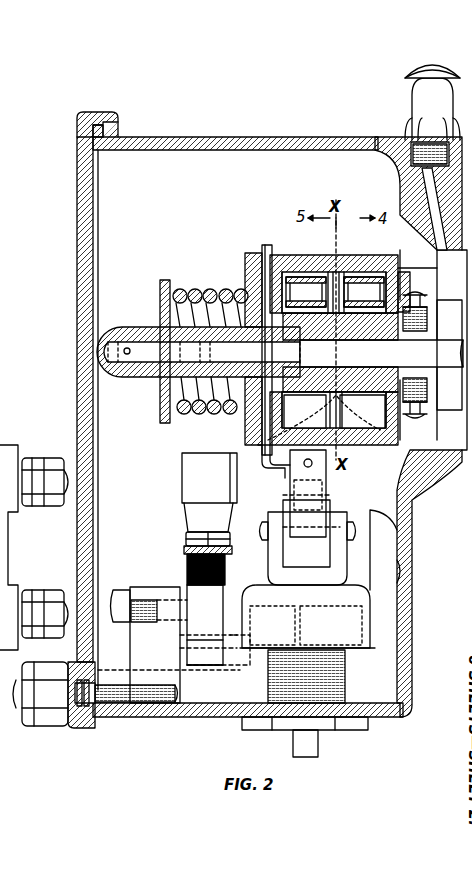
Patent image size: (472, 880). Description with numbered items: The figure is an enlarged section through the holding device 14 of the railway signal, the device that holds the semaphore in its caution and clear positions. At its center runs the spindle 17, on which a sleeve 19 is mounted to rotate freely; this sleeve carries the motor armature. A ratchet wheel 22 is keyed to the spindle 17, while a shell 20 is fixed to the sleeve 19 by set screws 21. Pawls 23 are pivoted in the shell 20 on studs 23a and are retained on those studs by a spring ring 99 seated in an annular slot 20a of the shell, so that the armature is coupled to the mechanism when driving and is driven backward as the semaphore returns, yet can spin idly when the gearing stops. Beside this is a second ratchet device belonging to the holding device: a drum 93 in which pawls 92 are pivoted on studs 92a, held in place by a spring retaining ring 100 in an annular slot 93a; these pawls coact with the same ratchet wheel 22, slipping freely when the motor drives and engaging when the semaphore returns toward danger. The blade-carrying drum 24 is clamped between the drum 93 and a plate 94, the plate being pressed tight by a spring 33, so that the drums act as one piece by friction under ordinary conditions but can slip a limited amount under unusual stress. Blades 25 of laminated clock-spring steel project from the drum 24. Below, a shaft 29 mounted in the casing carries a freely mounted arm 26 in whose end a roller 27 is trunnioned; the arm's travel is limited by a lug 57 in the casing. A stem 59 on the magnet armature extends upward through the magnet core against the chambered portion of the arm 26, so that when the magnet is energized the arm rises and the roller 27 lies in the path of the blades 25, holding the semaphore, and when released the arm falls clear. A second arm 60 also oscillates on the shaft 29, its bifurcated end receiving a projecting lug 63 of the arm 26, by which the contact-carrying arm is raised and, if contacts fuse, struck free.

The holding device 14 is at (267, 420).
The spindle 17 is at (280, 352).
The sleeve 19 is at (445, 340).
The shell 20 is at (378, 263).
The annular slot 20a is at (350, 438).
The set screws 21 is at (416, 420).
The ratchet wheel 22 is at (360, 388).
The pawls 23 is at (398, 262).
The studs 23a is at (428, 300).
The drum 24 is at (265, 245).
The blades 25 is at (311, 493).
The arm 26 is at (358, 592).
The roller 27 is at (308, 542).
The shaft 29 is at (238, 600).
The spring 33 is at (197, 292).
The lug 57 is at (380, 512).
The stem 59 is at (318, 748).
The second arm 60 is at (186, 620).
The projecting lug 63 is at (244, 620).
The pawls 92 is at (302, 268).
The studs 92a is at (340, 272).
The drum 93 is at (297, 424).
The annular slot 93a is at (276, 462).
The plate 94 is at (252, 256).
The spring ring 99 is at (392, 440).
The spring retaining ring 100 is at (247, 437).